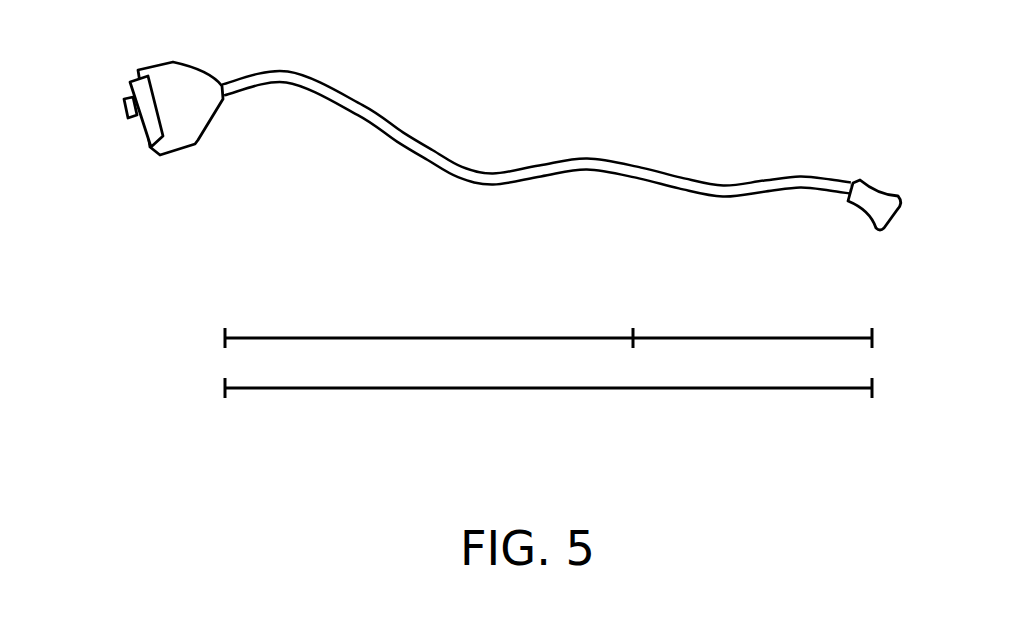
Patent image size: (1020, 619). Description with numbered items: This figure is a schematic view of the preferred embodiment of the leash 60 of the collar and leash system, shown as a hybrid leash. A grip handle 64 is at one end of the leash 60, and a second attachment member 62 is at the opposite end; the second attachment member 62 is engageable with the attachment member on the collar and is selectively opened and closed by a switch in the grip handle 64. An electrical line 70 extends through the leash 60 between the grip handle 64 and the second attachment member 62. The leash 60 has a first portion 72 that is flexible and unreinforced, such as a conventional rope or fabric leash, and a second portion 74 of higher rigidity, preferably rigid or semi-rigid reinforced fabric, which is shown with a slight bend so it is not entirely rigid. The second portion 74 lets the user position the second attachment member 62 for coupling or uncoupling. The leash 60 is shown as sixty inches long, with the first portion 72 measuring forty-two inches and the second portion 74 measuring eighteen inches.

The leash 60 is at (490, 235).
The second attachment member 62 is at (880, 195).
The grip handle 64 is at (140, 137).
The electrical line 70 is at (335, 75).
The first portion 72 is at (307, 337).
The second portion 74 is at (723, 182).